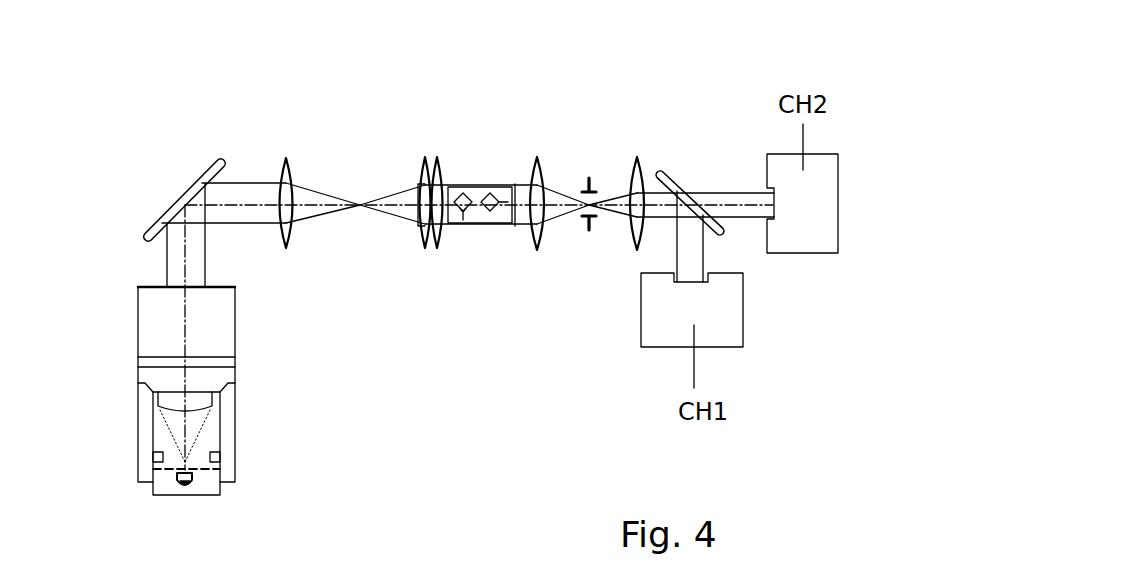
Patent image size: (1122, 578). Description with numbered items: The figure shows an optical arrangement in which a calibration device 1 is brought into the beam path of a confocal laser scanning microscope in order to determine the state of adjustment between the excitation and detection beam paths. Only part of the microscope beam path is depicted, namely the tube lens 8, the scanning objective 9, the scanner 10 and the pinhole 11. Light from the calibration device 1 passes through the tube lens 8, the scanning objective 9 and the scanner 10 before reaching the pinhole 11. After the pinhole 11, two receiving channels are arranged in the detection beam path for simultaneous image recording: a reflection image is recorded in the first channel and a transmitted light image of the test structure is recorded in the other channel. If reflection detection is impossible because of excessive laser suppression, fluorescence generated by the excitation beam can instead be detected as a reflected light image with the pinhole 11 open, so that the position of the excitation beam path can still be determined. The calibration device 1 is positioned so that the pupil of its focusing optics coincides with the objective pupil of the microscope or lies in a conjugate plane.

The calibration device 1 is at (262, 387).
The tube lens 8 is at (285, 156).
The scanning objective 9 is at (427, 156).
The scanner 10 is at (480, 184).
The pinhole 11 is at (589, 176).